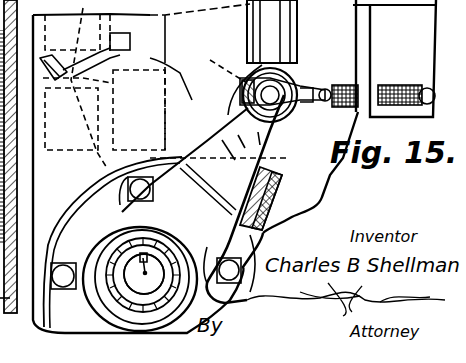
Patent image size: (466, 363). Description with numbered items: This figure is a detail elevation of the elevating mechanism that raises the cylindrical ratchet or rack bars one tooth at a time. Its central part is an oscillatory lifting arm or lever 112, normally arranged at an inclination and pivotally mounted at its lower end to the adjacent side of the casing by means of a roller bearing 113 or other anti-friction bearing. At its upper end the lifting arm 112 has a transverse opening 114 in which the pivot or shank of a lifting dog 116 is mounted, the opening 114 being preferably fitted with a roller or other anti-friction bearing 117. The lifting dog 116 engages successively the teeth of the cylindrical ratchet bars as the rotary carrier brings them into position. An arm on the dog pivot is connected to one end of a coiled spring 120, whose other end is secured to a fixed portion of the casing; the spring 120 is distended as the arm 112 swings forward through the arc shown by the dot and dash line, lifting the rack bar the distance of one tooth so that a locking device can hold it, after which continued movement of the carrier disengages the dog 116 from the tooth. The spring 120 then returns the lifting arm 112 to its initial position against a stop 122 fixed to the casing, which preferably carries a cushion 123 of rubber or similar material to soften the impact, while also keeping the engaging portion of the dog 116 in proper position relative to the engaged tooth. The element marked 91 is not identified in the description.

The cylinder / arrow guide 91 is at (203, 58).
The lifting arm 112 is at (170, 203).
The roller bearing 113 is at (145, 273).
The transverse opening 114 is at (292, 72).
The lifting dog 116 is at (135, 104).
The roller bearing 117 is at (272, 124).
The coiled spring 120 is at (390, 83).
The stop 122 is at (282, 180).
The cushion 123 is at (280, 197).